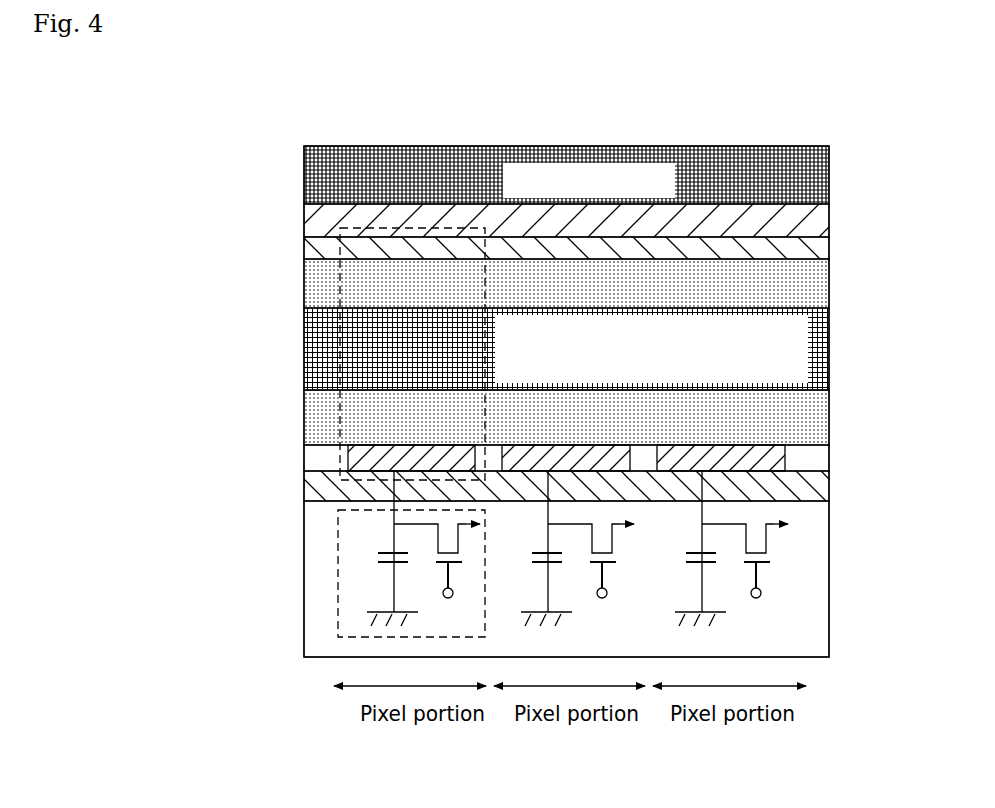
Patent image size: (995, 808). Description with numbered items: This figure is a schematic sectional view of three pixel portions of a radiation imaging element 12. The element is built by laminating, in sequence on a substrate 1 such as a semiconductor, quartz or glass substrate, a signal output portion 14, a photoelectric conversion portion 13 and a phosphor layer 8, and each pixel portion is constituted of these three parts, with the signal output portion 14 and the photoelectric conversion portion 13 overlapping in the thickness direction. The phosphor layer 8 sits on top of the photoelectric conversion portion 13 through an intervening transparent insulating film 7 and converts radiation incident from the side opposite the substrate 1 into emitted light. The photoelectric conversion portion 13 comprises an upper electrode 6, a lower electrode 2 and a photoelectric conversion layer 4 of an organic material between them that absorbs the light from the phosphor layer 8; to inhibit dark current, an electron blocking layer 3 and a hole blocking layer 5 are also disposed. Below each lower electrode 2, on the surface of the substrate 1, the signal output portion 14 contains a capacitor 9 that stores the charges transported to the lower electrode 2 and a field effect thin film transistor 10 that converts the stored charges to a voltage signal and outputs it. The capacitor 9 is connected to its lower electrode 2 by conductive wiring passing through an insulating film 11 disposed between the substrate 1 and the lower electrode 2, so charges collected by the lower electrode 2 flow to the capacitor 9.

The substrate 1 is at (812, 604).
The lower electrode 2 is at (373, 471).
The electron blocking layer 3 is at (815, 417).
The photoelectric conversion layer 4 is at (815, 352).
The hole blocking layer 5 is at (815, 283).
The upper electrode 6 is at (815, 247).
The transparent insulating film 7 is at (815, 217).
The phosphor layer 8 is at (815, 178).
The capacitor 9 is at (389, 566).
The thin film transistor 10 is at (455, 566).
The insulating film 11 is at (815, 487).
The radiation imaging element 12 is at (821, 124).
The photoelectric conversion portion 13 is at (342, 346).
The signal output portion 14 is at (338, 553).